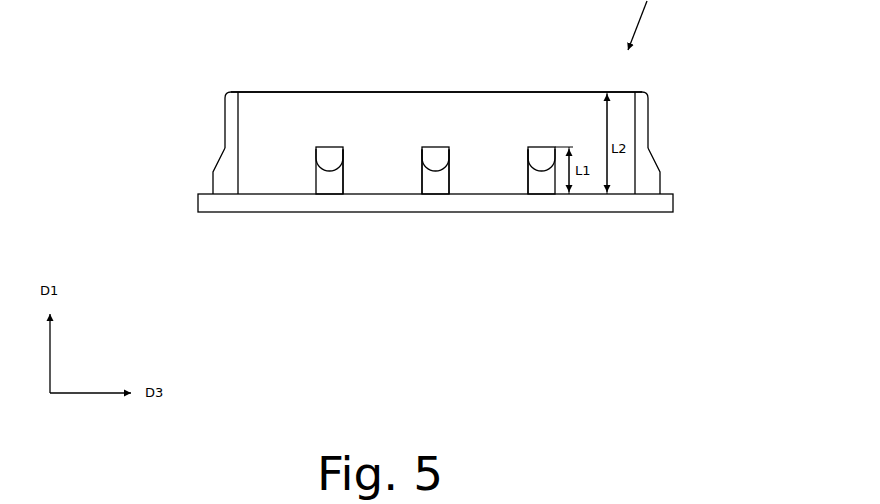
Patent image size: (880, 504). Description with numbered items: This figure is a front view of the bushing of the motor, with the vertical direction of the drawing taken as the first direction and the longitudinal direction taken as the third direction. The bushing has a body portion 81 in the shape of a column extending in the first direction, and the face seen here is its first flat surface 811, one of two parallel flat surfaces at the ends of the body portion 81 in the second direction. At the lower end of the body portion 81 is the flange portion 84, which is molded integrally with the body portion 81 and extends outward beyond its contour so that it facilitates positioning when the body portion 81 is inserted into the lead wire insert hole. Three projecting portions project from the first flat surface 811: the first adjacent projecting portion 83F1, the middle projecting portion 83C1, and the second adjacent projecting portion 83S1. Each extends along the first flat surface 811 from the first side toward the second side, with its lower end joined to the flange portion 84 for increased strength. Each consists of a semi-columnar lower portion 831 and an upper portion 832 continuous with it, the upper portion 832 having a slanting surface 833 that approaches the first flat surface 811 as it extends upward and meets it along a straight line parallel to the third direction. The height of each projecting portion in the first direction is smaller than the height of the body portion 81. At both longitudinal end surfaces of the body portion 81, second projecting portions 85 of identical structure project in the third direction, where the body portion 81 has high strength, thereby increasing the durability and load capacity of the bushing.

The body portion 81 is at (350, 100).
The first flat surface 811 is at (279, 105).
The flange portion 84 is at (673, 203).
The second projecting portion 85 is at (220, 160).
The first adjacent projecting portion 83F1 is at (333, 185).
The middle projecting portion 83C1 is at (437, 185).
The second adjacent projecting portion 83S1 is at (545, 185).
The slanting surface 833 is at (432, 155).
The upper portion 832 is at (422, 159).
The lower portion 831 is at (422, 183).